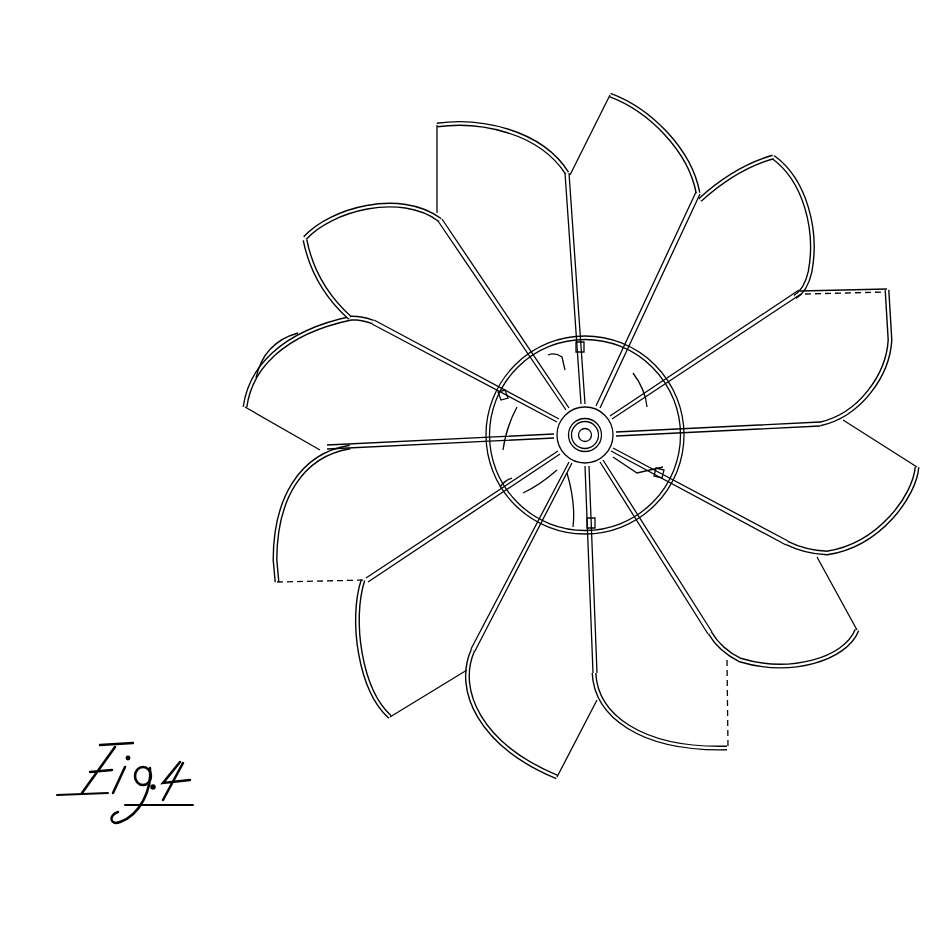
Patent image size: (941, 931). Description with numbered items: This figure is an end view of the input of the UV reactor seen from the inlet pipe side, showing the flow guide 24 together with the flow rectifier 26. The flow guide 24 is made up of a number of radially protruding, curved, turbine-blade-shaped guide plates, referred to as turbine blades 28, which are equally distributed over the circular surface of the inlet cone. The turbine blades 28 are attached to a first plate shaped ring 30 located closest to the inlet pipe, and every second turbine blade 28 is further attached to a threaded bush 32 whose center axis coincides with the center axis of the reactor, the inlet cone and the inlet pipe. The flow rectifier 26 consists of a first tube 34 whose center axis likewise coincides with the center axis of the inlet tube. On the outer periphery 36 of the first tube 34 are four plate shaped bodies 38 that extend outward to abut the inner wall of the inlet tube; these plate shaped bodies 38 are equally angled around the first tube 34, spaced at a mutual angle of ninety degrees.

The flow guide 24 is at (581, 415).
The flow rectifier 26 is at (686, 390).
The turbine blades 28 is at (581, 436).
The first plate shaped ring 30 is at (655, 348).
The threaded bush 32 is at (545, 418).
The first tube 34 is at (602, 441).
The outer periphery 36 is at (588, 449).
The plate shaped bodies 38 is at (655, 352).